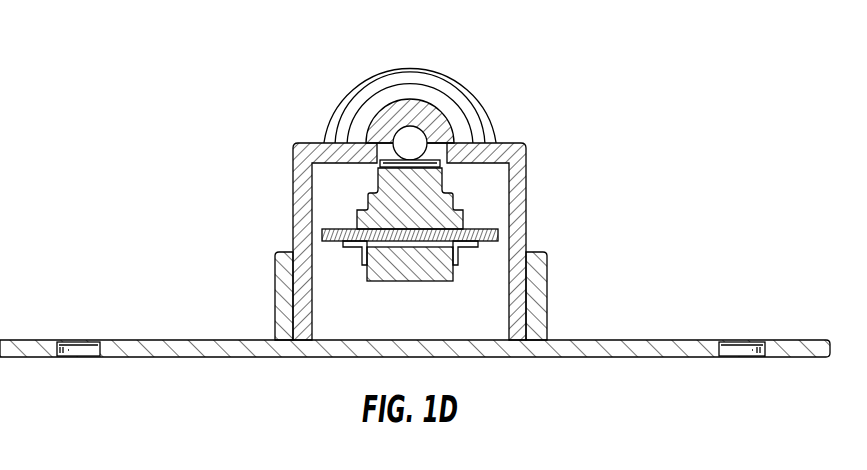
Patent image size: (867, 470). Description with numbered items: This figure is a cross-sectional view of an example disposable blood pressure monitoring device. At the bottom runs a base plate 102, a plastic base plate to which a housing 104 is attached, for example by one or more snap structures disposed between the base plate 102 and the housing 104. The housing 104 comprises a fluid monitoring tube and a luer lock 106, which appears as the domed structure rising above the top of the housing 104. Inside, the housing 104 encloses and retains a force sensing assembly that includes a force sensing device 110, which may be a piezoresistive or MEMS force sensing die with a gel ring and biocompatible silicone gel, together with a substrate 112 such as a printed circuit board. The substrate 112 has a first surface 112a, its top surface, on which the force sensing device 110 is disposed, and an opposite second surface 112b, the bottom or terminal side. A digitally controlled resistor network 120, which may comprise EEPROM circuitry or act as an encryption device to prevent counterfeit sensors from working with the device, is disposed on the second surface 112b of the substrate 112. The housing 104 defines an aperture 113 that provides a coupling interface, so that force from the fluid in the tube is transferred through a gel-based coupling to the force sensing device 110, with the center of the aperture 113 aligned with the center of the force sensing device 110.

The base plate 102 is at (25, 340).
The housing 104 is at (440, 107).
The luer lock 106 is at (393, 60).
The force sensing device 110 is at (417, 202).
The substrate 112 is at (497, 229).
The first surface 112a is at (336, 229).
The second surface 112b is at (333, 243).
The aperture 113 is at (450, 165).
The digitally controlled resistor network 120 is at (404, 272).